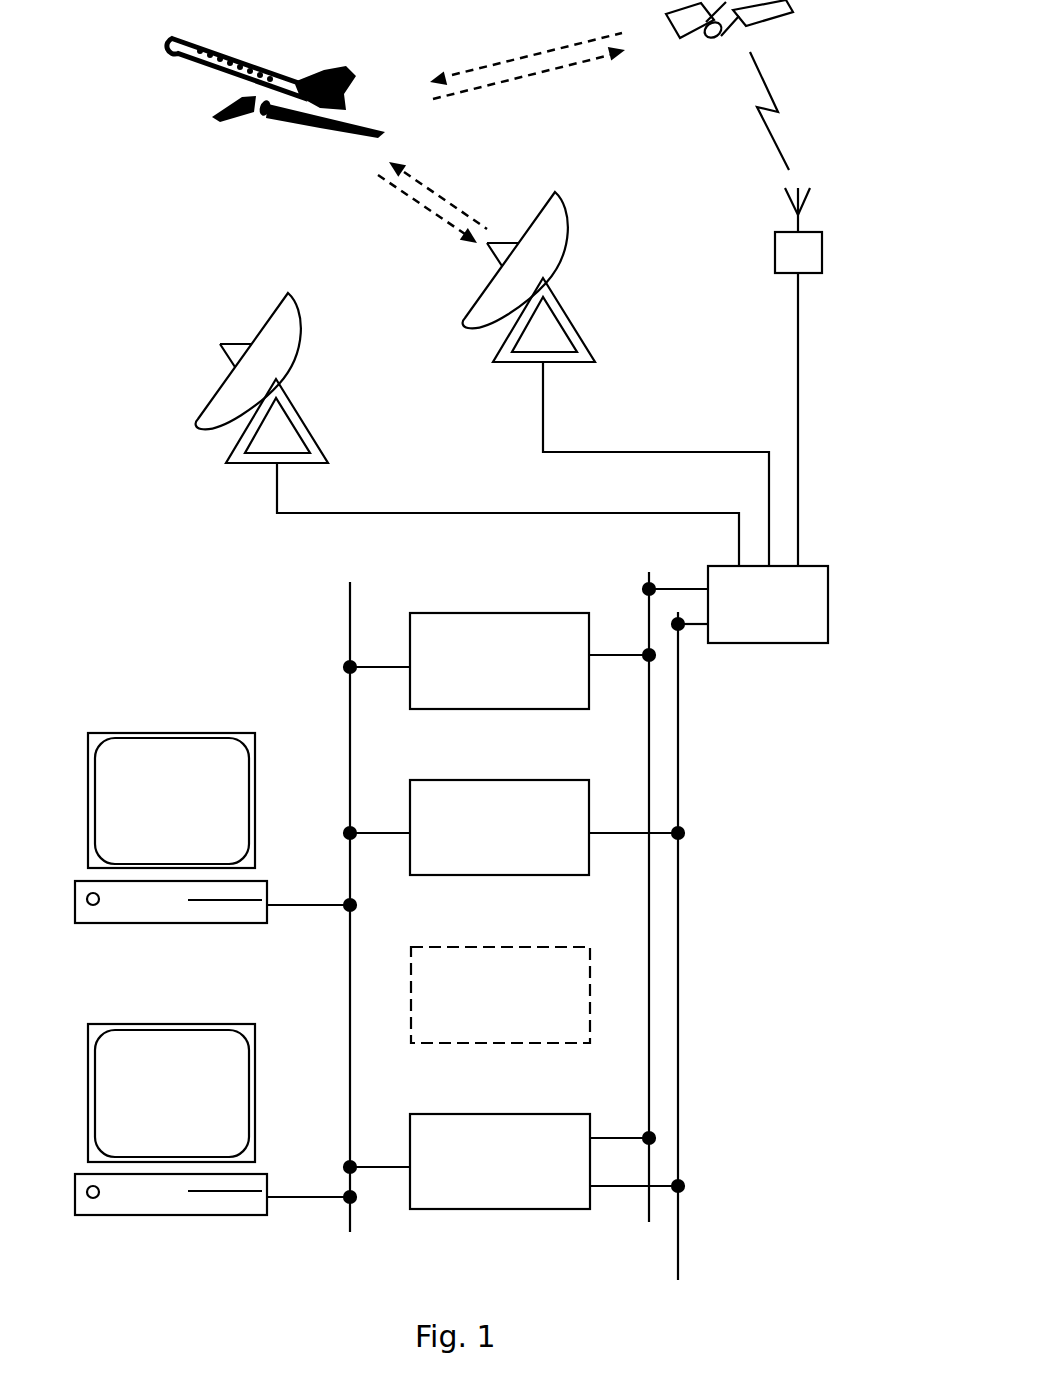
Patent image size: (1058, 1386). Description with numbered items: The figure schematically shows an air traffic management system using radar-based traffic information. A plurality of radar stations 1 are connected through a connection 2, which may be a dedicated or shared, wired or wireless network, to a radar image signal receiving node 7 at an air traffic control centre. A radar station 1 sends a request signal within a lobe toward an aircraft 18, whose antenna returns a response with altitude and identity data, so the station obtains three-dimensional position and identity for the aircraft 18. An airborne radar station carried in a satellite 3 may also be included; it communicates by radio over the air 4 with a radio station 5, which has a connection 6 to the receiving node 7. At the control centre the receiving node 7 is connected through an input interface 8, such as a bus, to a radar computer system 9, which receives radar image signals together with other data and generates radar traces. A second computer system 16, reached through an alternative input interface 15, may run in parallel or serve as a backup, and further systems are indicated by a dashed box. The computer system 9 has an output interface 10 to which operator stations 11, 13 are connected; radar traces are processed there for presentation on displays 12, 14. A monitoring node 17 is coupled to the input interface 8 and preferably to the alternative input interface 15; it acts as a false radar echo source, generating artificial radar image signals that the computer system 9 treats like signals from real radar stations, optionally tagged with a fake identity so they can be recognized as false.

The radar station 1 is at (553, 250).
The connection 2 is at (618, 450).
The satellite 3 is at (705, 40).
The radio over the air 4 is at (783, 100).
The radio station 5 is at (823, 257).
The connection 6 is at (798, 410).
The radar image signal receiving node 7 is at (778, 614).
The input interface 8 is at (649, 625).
The radar computer system 9 is at (508, 669).
The output interface 10 is at (350, 642).
The operator station 11 is at (147, 917).
The display 12 is at (194, 804).
The operator station 13 is at (158, 1208).
The display 14 is at (191, 1093).
The alternative input interface 15 is at (678, 690).
The second computer system 16 is at (517, 834).
The monitoring node 17 is at (519, 1171).
The aircraft 18 is at (173, 70).